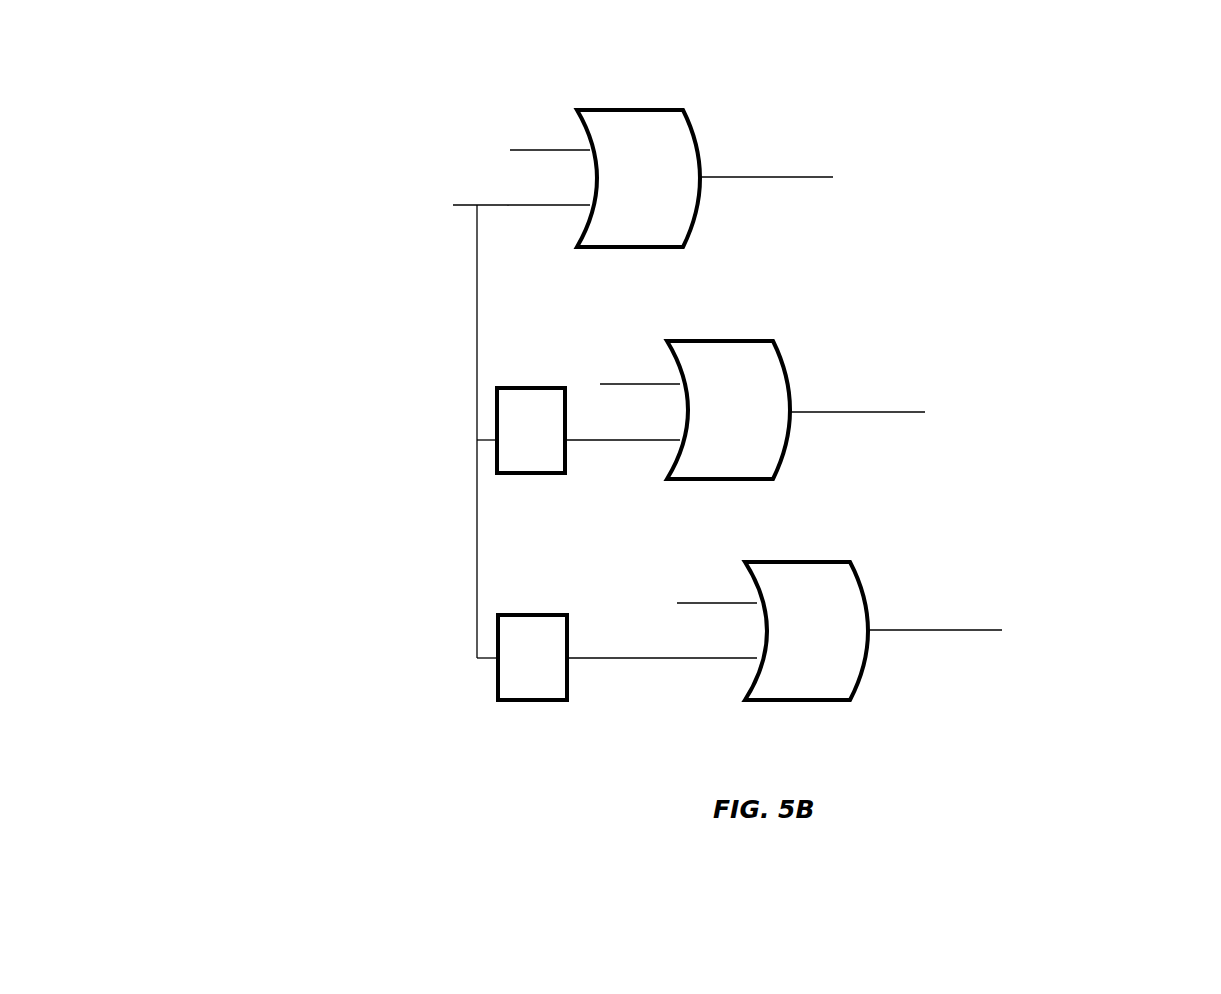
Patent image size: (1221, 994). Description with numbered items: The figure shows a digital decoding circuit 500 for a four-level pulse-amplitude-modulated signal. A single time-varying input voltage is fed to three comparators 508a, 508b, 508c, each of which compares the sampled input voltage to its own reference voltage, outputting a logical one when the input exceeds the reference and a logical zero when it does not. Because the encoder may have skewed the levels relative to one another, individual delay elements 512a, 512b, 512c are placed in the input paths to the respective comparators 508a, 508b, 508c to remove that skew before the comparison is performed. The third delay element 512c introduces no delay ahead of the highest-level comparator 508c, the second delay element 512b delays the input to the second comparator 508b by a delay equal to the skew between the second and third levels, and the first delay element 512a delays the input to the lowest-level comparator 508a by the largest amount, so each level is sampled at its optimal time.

The circuit 500 is at (363, 126).
The first comparator 508a is at (812, 700).
The second comparator 508b is at (707, 341).
The third comparator 508c is at (640, 110).
The first delay element 512a is at (543, 700).
The second delay element 512b is at (513, 473).
The third delay element 512c is at (508, 205).